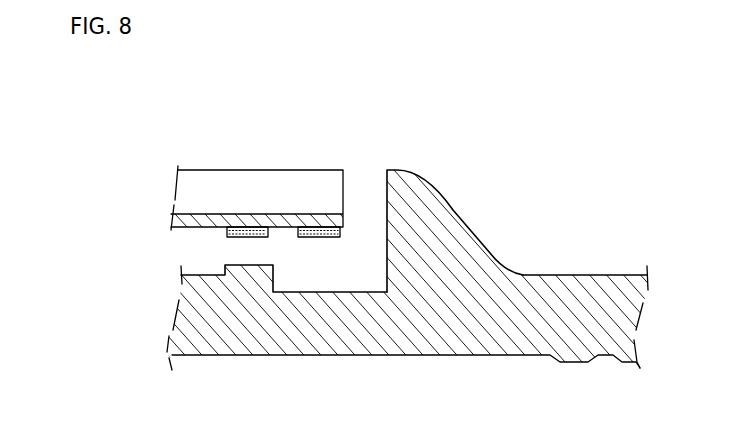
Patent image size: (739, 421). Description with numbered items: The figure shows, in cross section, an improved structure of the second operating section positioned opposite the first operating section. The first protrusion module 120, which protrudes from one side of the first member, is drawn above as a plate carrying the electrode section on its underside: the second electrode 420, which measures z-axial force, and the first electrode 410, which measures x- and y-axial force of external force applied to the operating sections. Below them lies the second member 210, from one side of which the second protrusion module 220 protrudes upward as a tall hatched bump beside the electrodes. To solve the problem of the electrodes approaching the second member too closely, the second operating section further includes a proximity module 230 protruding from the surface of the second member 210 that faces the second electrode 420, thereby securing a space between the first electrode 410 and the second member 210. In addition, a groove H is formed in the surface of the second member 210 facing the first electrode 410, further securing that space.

The first protrusion module 120 is at (208, 170).
The second member 210 is at (210, 355).
The second protrusion module 220 is at (453, 205).
The proximity module 230 is at (228, 264).
The first electrode 410 is at (316, 233).
The second electrode 420 is at (250, 233).
The groove H is at (337, 275).